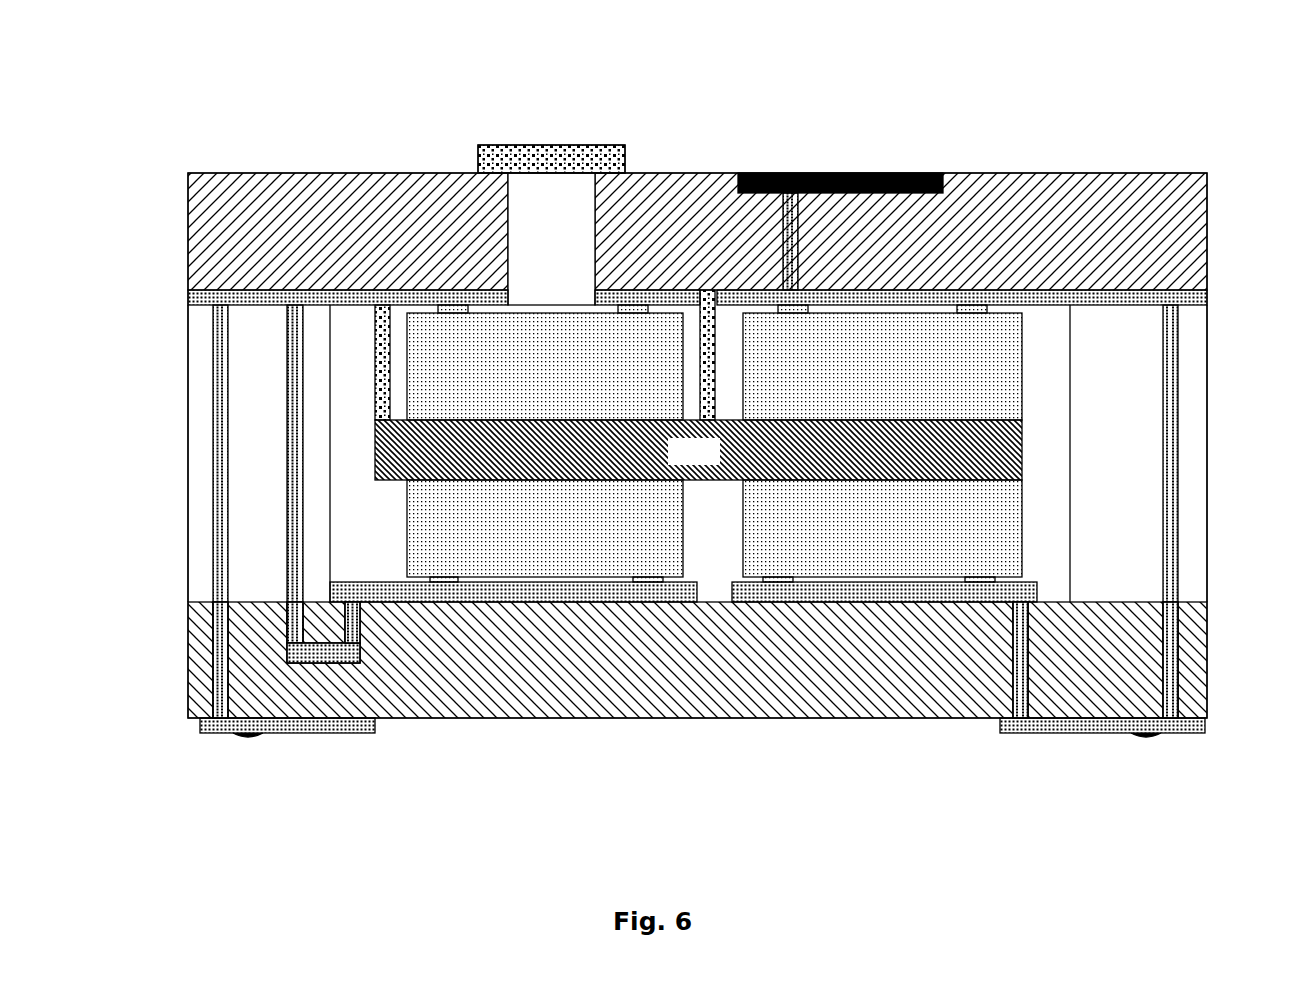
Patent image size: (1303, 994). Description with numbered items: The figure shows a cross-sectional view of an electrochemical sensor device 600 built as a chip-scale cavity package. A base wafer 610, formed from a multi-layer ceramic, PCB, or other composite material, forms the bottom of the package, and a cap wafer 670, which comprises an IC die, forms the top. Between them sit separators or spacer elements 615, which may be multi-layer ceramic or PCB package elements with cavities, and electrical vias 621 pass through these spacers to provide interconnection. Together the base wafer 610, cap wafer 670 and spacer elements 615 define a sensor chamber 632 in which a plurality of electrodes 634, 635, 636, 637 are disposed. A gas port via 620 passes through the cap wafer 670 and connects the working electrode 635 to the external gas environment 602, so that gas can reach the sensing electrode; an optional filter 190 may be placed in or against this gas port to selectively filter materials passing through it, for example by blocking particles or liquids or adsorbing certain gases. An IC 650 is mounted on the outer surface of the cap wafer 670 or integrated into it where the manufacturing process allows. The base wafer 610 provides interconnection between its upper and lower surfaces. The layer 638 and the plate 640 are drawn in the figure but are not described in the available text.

The electrochemical sensor device 600 is at (186, 54).
The external gas environment 602 is at (522, 115).
The gas port via 620 is at (550, 196).
The filter 190 is at (609, 142).
The IC 650 is at (841, 162).
The conductive layer 638 is at (276, 288).
The cap wafer 670 is at (184, 262).
The spacer elements 615 is at (184, 426).
The base wafer 610 is at (184, 641).
The sensor chamber 632 is at (718, 443).
The working electrode 635 is at (555, 383).
The electrode 637 is at (901, 383).
The interconnect layer 640 is at (712, 463).
The electrode 634 is at (555, 531).
The electrode 636 is at (901, 531).
The electrical vias 621 is at (1182, 467).